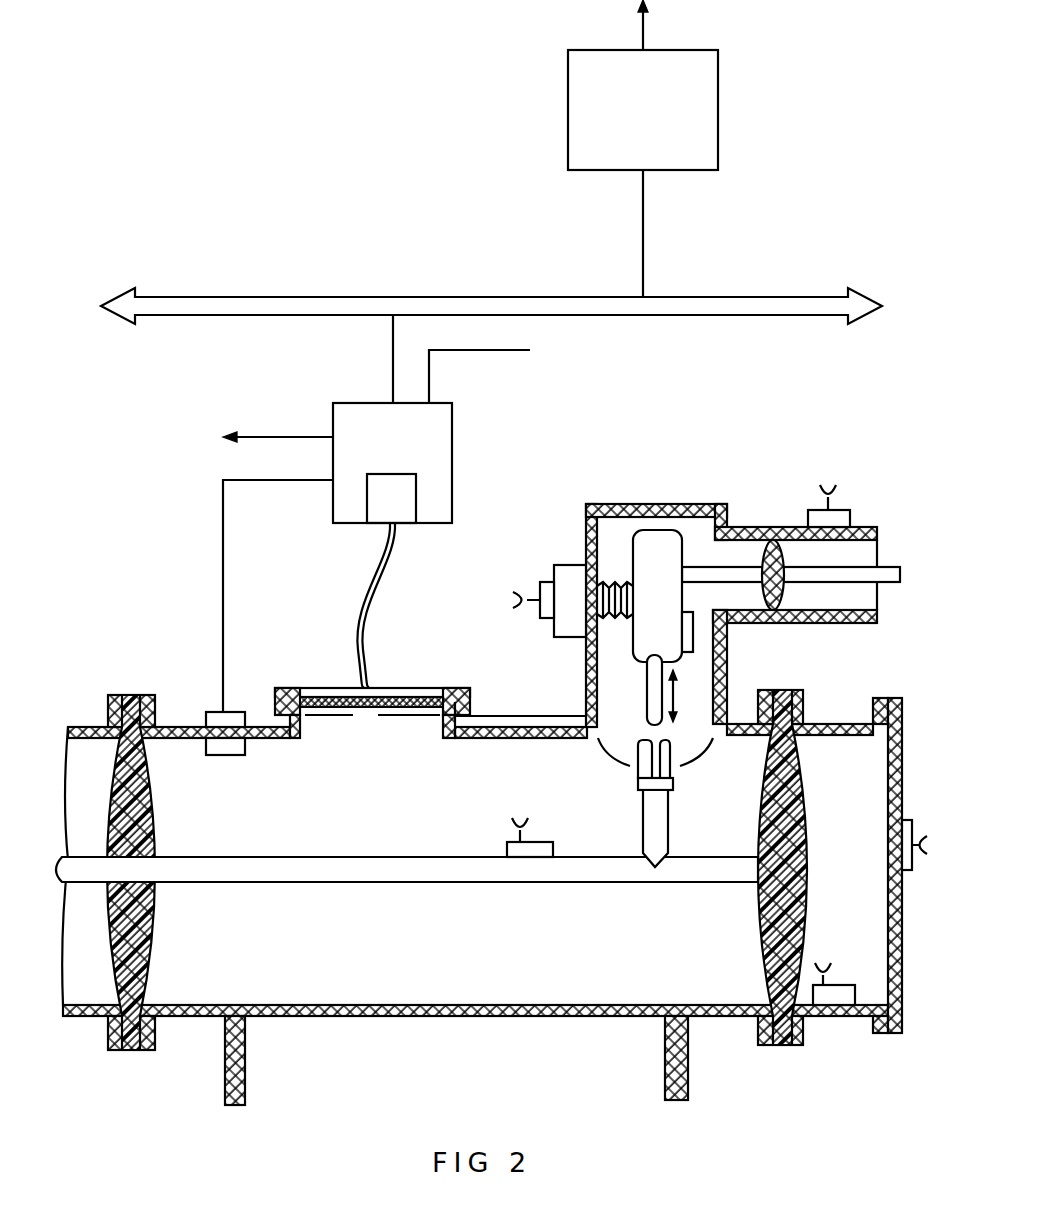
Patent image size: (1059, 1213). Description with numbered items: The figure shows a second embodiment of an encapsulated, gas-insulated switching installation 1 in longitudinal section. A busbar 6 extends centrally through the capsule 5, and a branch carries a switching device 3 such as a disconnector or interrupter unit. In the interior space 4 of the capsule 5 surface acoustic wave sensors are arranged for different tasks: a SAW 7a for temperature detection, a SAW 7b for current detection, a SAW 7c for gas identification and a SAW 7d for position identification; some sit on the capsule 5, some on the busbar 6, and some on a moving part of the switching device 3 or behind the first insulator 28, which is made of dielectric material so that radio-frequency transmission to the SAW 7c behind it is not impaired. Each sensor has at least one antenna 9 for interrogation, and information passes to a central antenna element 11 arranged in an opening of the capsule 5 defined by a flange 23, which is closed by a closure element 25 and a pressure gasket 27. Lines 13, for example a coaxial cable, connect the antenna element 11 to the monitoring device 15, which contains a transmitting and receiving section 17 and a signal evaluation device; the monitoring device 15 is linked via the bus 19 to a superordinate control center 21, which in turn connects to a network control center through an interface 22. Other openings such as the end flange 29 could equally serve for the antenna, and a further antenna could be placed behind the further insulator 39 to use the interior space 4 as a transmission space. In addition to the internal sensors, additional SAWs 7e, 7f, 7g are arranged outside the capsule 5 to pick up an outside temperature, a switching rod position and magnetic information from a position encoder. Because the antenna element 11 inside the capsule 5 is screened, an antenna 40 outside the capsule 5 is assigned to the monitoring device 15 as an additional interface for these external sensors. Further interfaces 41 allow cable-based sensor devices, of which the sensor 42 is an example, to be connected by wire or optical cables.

The switching installation 1 is at (175, 722).
The switching device 3 is at (655, 530).
The interior space 4 is at (415, 980).
The capsule 5 is at (368, 1003).
The busbar 6 is at (473, 873).
The SAW for temperature detection 7a is at (212, 755).
The SAW for current detection 7b is at (540, 842).
The SAW for gas identification 7c is at (843, 975).
The SAW for position identification 7d is at (695, 628).
The SAW for outside temperature 7e is at (905, 815).
The SAW for switching rod position 7f is at (805, 518).
The SAW for magnetic information 7g is at (540, 588).
The antenna 9 is at (710, 638).
The antenna element 11 is at (353, 717).
The lines 13 is at (378, 590).
The monitoring device 15 is at (452, 425).
The transmitting and receiving section 17 is at (416, 490).
The bus 19 is at (358, 297).
The control center 21 is at (718, 113).
The interface 22 is at (645, 20).
The flange 23 is at (473, 712).
The closure element 25 is at (478, 708).
The pressure gasket 27 is at (290, 688).
The insulator 28 is at (772, 838).
The end flange 29 is at (883, 700).
The further insulator 39 is at (147, 917).
The antenna 40 is at (541, 344).
The interfaces 41 is at (258, 480).
The sensor 42 is at (230, 710).